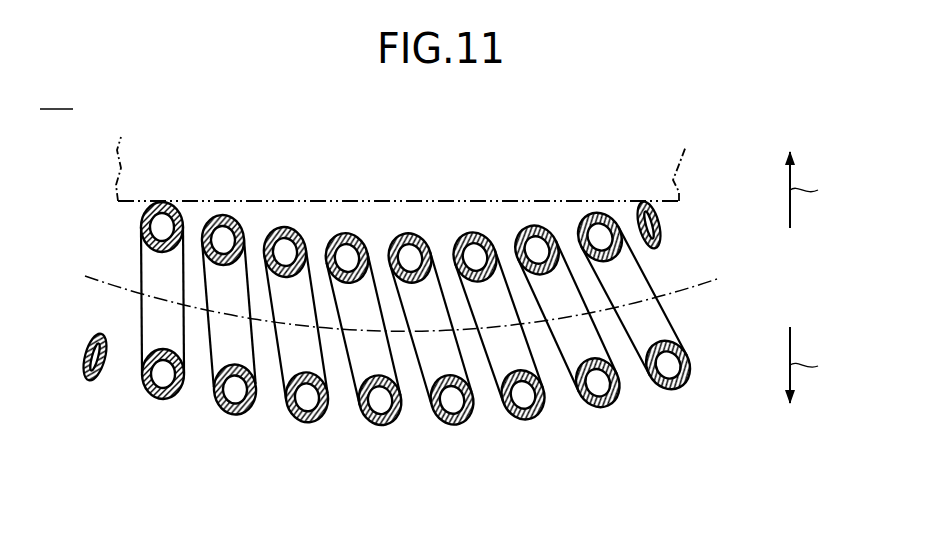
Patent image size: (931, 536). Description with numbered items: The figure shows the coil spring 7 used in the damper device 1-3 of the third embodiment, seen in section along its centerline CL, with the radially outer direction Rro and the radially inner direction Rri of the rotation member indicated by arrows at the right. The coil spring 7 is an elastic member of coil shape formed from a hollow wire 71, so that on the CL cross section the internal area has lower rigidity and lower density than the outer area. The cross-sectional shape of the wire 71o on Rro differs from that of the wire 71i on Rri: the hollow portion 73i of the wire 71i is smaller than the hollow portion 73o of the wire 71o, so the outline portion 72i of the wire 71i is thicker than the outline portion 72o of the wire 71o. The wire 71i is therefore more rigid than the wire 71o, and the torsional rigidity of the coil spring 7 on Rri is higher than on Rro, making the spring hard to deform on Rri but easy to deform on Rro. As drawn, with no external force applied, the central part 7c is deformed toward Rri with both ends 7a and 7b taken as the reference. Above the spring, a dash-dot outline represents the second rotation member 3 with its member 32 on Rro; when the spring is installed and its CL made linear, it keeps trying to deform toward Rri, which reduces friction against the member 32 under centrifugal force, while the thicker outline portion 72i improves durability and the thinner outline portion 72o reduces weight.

The second rotation member 3 is at (426, 170).
The member 32 is at (510, 198).
The coil spring 7 is at (420, 314).
The end 7a is at (667, 219).
The end 7b is at (76, 353).
The central part 7c is at (414, 432).
The wire 71 is at (439, 314).
The wire on Rro 71o is at (378, 308).
The wire on Rri 71i is at (521, 421).
The outline portion 72o is at (451, 316).
The outline portion 72i is at (462, 436).
The hollow portion 73o is at (410, 258).
The hollow portion 73i is at (452, 400).
The centerline CL is at (398, 299).
The outside of the rotation member in the radius direction Rro is at (822, 190).
The inside of the rotation member in the radius direction Rri is at (819, 365).
The damper device 1-3 is at (56, 98).